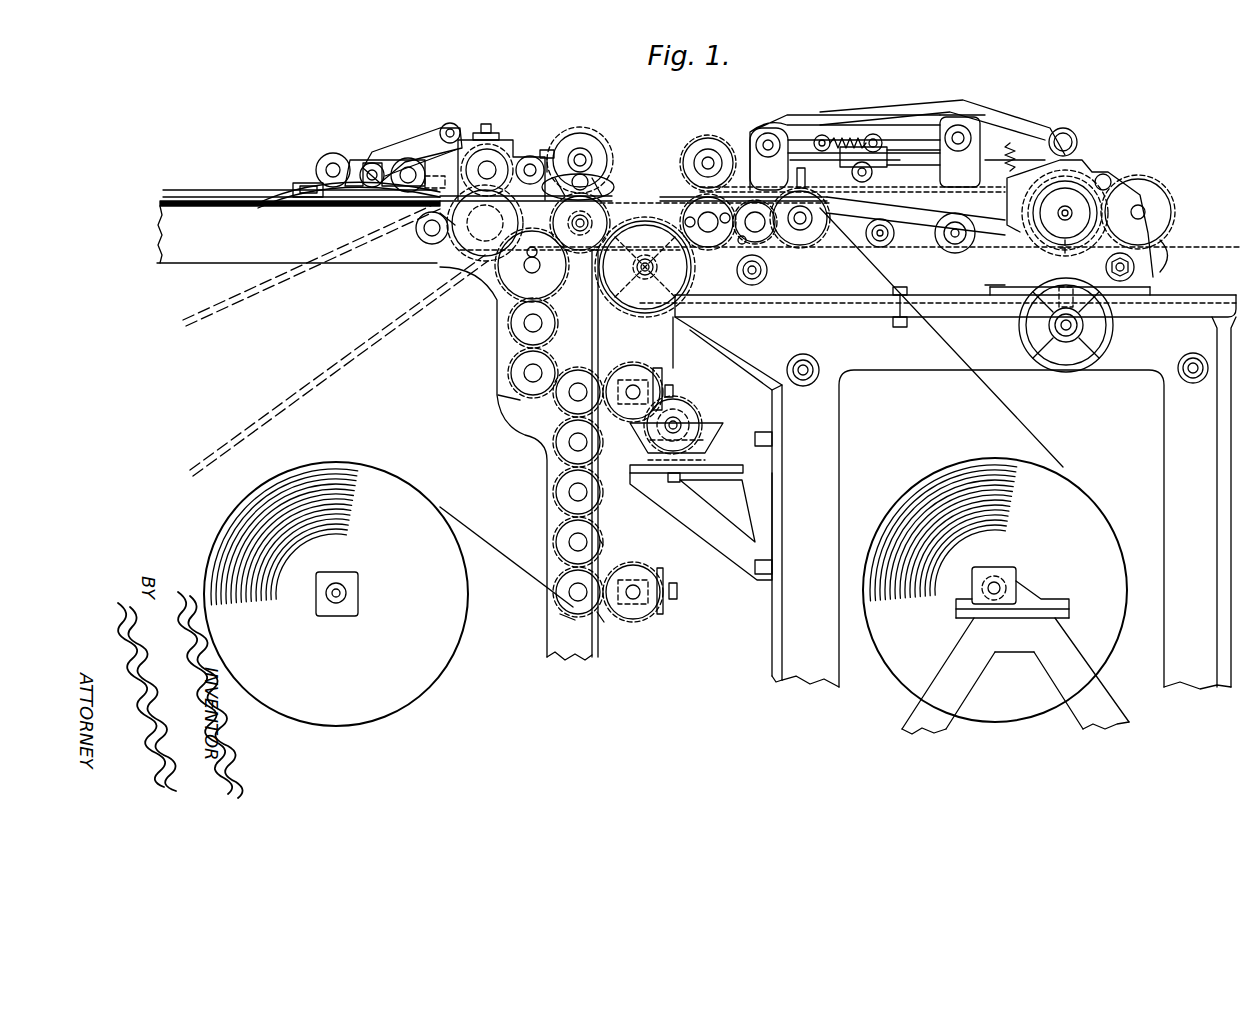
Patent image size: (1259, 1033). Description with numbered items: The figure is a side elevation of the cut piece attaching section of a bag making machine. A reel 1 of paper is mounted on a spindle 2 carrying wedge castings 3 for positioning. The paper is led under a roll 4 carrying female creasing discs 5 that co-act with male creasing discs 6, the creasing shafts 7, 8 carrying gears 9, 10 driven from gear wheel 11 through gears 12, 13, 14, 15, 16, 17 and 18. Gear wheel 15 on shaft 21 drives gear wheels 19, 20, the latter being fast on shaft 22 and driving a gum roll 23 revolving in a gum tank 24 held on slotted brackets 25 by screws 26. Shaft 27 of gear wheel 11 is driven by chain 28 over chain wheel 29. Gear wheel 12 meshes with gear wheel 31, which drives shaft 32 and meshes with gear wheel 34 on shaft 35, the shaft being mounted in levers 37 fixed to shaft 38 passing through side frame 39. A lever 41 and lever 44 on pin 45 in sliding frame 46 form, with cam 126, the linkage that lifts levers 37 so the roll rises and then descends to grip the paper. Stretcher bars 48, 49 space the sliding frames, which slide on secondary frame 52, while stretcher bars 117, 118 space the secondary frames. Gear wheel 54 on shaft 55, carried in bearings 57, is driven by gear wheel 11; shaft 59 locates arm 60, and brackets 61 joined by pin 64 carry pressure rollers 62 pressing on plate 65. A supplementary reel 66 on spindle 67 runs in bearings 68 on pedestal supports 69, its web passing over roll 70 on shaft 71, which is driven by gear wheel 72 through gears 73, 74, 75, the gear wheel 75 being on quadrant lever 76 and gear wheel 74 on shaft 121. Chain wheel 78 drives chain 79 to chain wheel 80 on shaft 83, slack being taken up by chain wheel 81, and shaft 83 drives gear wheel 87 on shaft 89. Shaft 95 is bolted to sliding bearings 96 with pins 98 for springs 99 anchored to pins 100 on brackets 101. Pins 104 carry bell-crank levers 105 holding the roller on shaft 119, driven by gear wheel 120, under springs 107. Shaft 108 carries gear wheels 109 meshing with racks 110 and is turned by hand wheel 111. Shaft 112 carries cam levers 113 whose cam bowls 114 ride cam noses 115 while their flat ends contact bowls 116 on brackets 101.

The reel 1 is at (413, 680).
The spindle 2 is at (346, 593).
The wedge castings 3 is at (332, 573).
The roll 4 is at (553, 580).
The female creasing discs 5 is at (570, 623).
The male creasing discs 6 is at (642, 567).
The creasing device shaft 7 is at (570, 597).
The creasing device shaft 8 is at (637, 596).
The gear 9 is at (603, 622).
The gear 10 is at (623, 570).
The gear wheel 11 is at (427, 252).
The gear wheel 12 is at (552, 300).
The gear wheel 13 is at (553, 336).
The gear wheel 14 is at (507, 392).
The gear wheel 15 is at (605, 422).
The gear wheel 16 is at (560, 452).
The gear wheel 17 is at (560, 500).
The gear wheel 18 is at (600, 540).
The gear wheel 19 is at (640, 372).
The gear wheel 20 is at (683, 407).
The shaft 21 is at (572, 396).
The shaft 22 is at (684, 422).
The gum roll 23 is at (697, 410).
The gum tank 24 is at (727, 430).
The brackets 25 is at (710, 477).
The screws 26 is at (674, 483).
The shaft 27 is at (437, 244).
The chain 28 is at (322, 398).
The chain wheel 29 is at (484, 262).
The gear wheel 31 is at (582, 251).
The shaft 32 is at (588, 215).
The gear wheel 34 is at (592, 133).
The shaft 35 is at (579, 147).
The levers 37 is at (546, 150).
The shaft 38 is at (528, 157).
The side frame 39 is at (355, 265).
The lever 41 is at (532, 265).
The lever 44 is at (1115, 183).
The pin 45 is at (1070, 208).
The sliding frame 46 is at (1153, 278).
The stretcher bar 48 is at (1130, 262).
The stretcher bar 49 is at (768, 270).
The secondary frame 52 is at (1162, 425).
The gear wheel 54 is at (523, 162).
The shaft 55 is at (485, 162).
The bearings 57 is at (430, 130).
The shaft 59 is at (450, 123).
The arm 60 is at (397, 152).
The brackets 61 is at (365, 165).
The pressure rollers 62 is at (320, 165).
The pin 64 is at (362, 160).
The plate 65 is at (277, 199).
The supplementary reel 66 is at (920, 478).
The spindle 67 is at (994, 582).
The bearings 68 is at (1022, 596).
The pedestal supports 69 is at (1095, 680).
The roll 70 is at (812, 218).
The shaft 71 is at (848, 240).
The gear wheel 72 is at (822, 236).
The gear wheel 73 is at (740, 244).
The gear wheel 74 is at (682, 210).
The gear wheel 75 is at (640, 312).
The quadrant lever 76 is at (645, 267).
The chain wheel 78 is at (730, 240).
The chain 79 is at (887, 246).
The chain wheel 80 is at (1030, 225).
The chain wheel 81 is at (950, 250).
The shaft 83 is at (1086, 305).
The gear wheel 87 is at (1172, 213).
The shaft 89 is at (1148, 208).
The shaft 95 is at (878, 182).
The sliding bearings 96 is at (880, 148).
The pins 98 is at (960, 125).
The springs 99 is at (883, 143).
The pins 100 is at (874, 133).
The brackets 101 is at (823, 135).
The pins 104 is at (770, 132).
The bell-crank levers 105 is at (740, 140).
The springs 107 is at (776, 178).
The shaft 108 is at (1070, 337).
The gear wheels 109 is at (1076, 331).
The racks 110 is at (996, 287).
The hand wheel 111 is at (1032, 357).
The shaft 112 is at (990, 123).
The cam levers 113 is at (1030, 125).
The cam bowls 114 is at (1068, 130).
The cam noses 115 is at (1058, 170).
The bowls 116 is at (838, 148).
The stretcher bar 117 is at (803, 386).
The stretcher bar 118 is at (1194, 383).
The shaft 119 is at (709, 150).
The gear wheel 120 is at (687, 155).
The shaft 121 is at (652, 274).
The cam 126 is at (1052, 240).